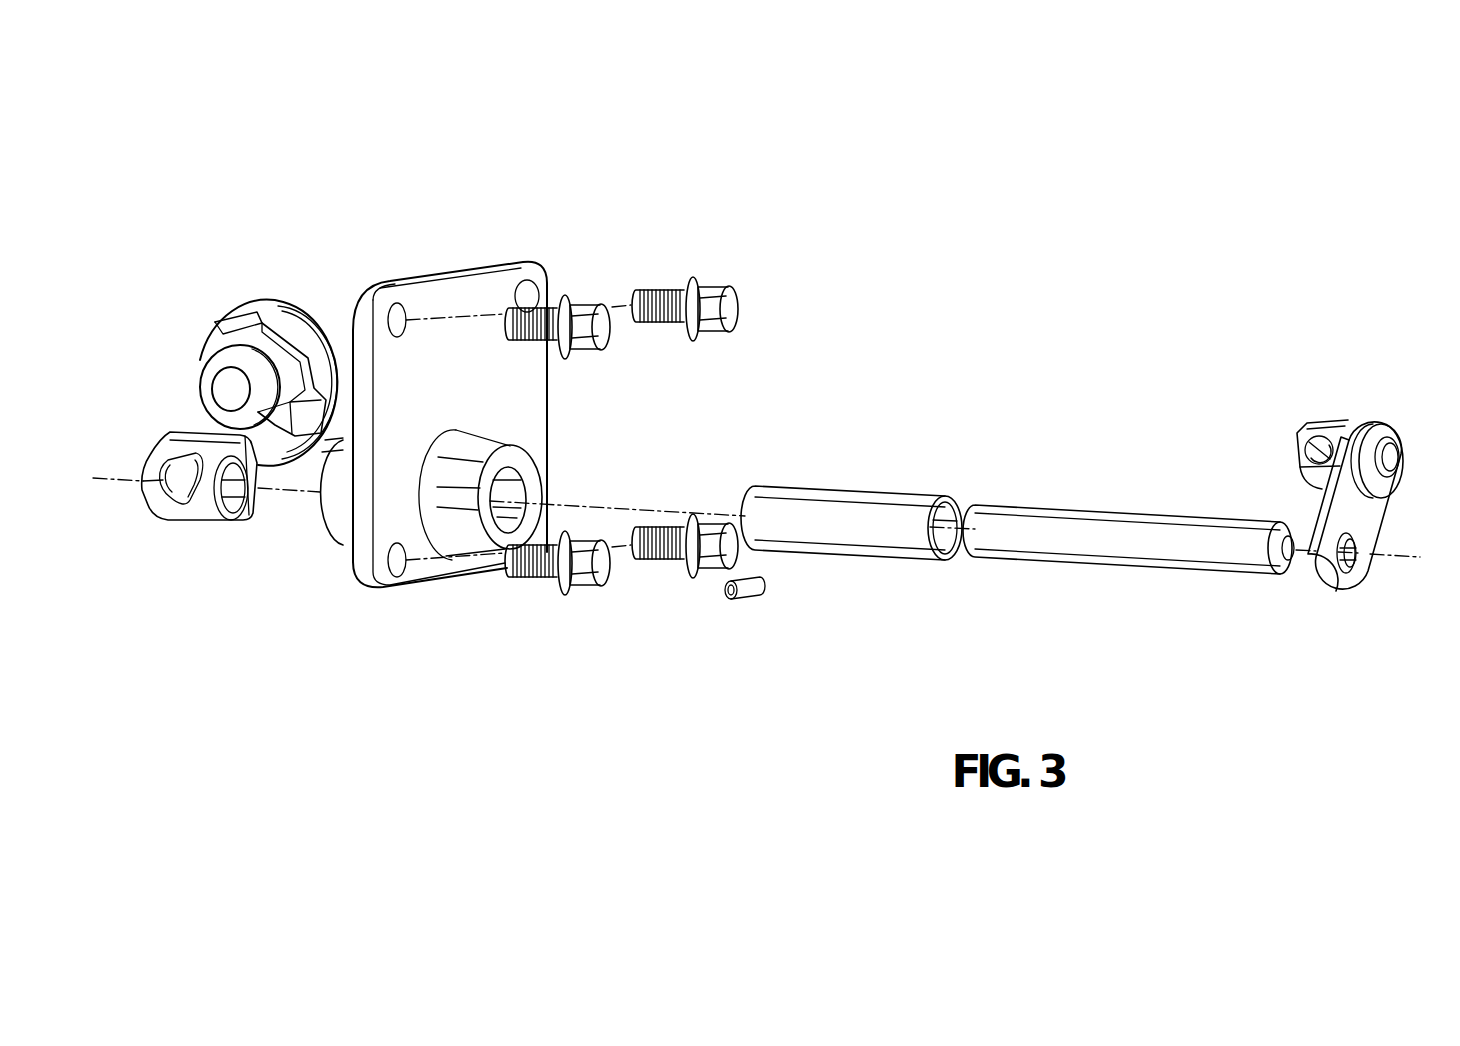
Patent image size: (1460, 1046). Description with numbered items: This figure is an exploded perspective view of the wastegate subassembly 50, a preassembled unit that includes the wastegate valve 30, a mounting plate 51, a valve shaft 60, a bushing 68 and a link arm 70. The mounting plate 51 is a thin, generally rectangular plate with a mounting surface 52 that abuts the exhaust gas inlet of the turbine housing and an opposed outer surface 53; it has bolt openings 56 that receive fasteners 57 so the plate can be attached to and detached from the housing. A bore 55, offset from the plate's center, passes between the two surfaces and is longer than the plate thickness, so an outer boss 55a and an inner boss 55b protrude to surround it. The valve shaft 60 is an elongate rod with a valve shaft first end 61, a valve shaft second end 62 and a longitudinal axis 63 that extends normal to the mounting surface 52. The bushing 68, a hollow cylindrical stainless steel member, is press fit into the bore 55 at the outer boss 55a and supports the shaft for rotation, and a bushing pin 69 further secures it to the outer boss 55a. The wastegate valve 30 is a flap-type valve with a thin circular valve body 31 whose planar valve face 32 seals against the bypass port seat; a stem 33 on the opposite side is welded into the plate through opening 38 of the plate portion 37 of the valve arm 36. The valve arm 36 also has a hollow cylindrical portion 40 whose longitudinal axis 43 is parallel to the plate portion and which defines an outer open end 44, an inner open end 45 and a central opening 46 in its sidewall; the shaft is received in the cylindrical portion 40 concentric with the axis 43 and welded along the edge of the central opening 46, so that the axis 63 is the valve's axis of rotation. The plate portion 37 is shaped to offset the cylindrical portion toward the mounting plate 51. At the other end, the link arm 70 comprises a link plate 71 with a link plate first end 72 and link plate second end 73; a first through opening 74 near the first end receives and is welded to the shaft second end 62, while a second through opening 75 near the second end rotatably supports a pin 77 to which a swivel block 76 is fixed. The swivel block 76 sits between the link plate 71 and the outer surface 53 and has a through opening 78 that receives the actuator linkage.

The wastegate valve 30 is at (217, 278).
The valve body 31 is at (270, 303).
The planar valve face 32 is at (298, 305).
The stem 33 is at (216, 322).
The valve arm 36 is at (200, 392).
The plate portion 37 is at (302, 390).
The plate through opening 38 is at (226, 376).
The cylindrical portion 40 is at (210, 518).
The longitudinal axis 43 is at (105, 477).
The outer open end 44 is at (148, 506).
The inner open end 45 is at (240, 495).
The central opening 46 is at (172, 500).
The wastegate subassembly 50 is at (903, 290).
The mounting plate 51 is at (480, 403).
The mounting surface 52 is at (350, 350).
The outer surface 53 is at (540, 373).
The bore 55 is at (513, 488).
The outer boss 55a is at (515, 458).
The inner boss 55b is at (338, 522).
The bolt openings 56 is at (403, 310).
The fasteners 57 is at (583, 297).
The valve shaft 60 is at (1073, 520).
The valve shaft first end 61 is at (953, 517).
The valve shaft second end 62 is at (1265, 573).
The longitudinal axis 63 is at (1392, 555).
The bushing 68 is at (797, 500).
The bushing pin 69 is at (758, 587).
The link arm 70 is at (1326, 610).
The link plate 71 is at (1343, 508).
The link plate first end 72 is at (1311, 580).
The link plate second end 73 is at (1363, 420).
The first through opening 74 is at (1349, 565).
The second through opening 75 is at (1380, 424).
The swivel block 76 is at (1323, 422).
The pin 77 is at (1388, 457).
The through opening 78 is at (1318, 452).